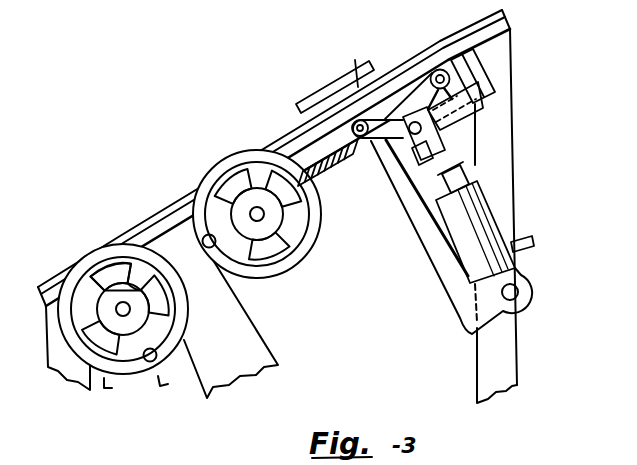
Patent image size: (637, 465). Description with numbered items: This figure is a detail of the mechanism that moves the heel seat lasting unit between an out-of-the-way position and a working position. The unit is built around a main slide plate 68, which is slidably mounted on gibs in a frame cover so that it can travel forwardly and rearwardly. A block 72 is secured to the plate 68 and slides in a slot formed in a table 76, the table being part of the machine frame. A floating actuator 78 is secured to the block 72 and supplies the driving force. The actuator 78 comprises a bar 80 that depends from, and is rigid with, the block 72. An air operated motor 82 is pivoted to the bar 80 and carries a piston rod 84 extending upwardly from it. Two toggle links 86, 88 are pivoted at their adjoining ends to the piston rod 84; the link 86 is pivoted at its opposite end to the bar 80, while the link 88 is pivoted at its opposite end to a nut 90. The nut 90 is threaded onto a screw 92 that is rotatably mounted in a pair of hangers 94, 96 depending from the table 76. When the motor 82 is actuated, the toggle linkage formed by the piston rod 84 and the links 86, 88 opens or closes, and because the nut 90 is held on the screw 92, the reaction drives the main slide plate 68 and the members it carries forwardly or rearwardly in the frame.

The main slide plate 68 is at (322, 97).
The block 72 is at (355, 60).
The table 76 is at (127, 234).
The floating actuator 78 is at (488, 187).
The bar 80 is at (423, 242).
The air operated motor 82 is at (487, 236).
The piston rod 84 is at (438, 151).
The toggle link 86 is at (392, 142).
The toggle link 88 is at (389, 113).
The nut 90 is at (482, 110).
The screw 92 is at (340, 172).
The hanger 94 is at (288, 211).
The hanger 96 is at (493, 68).